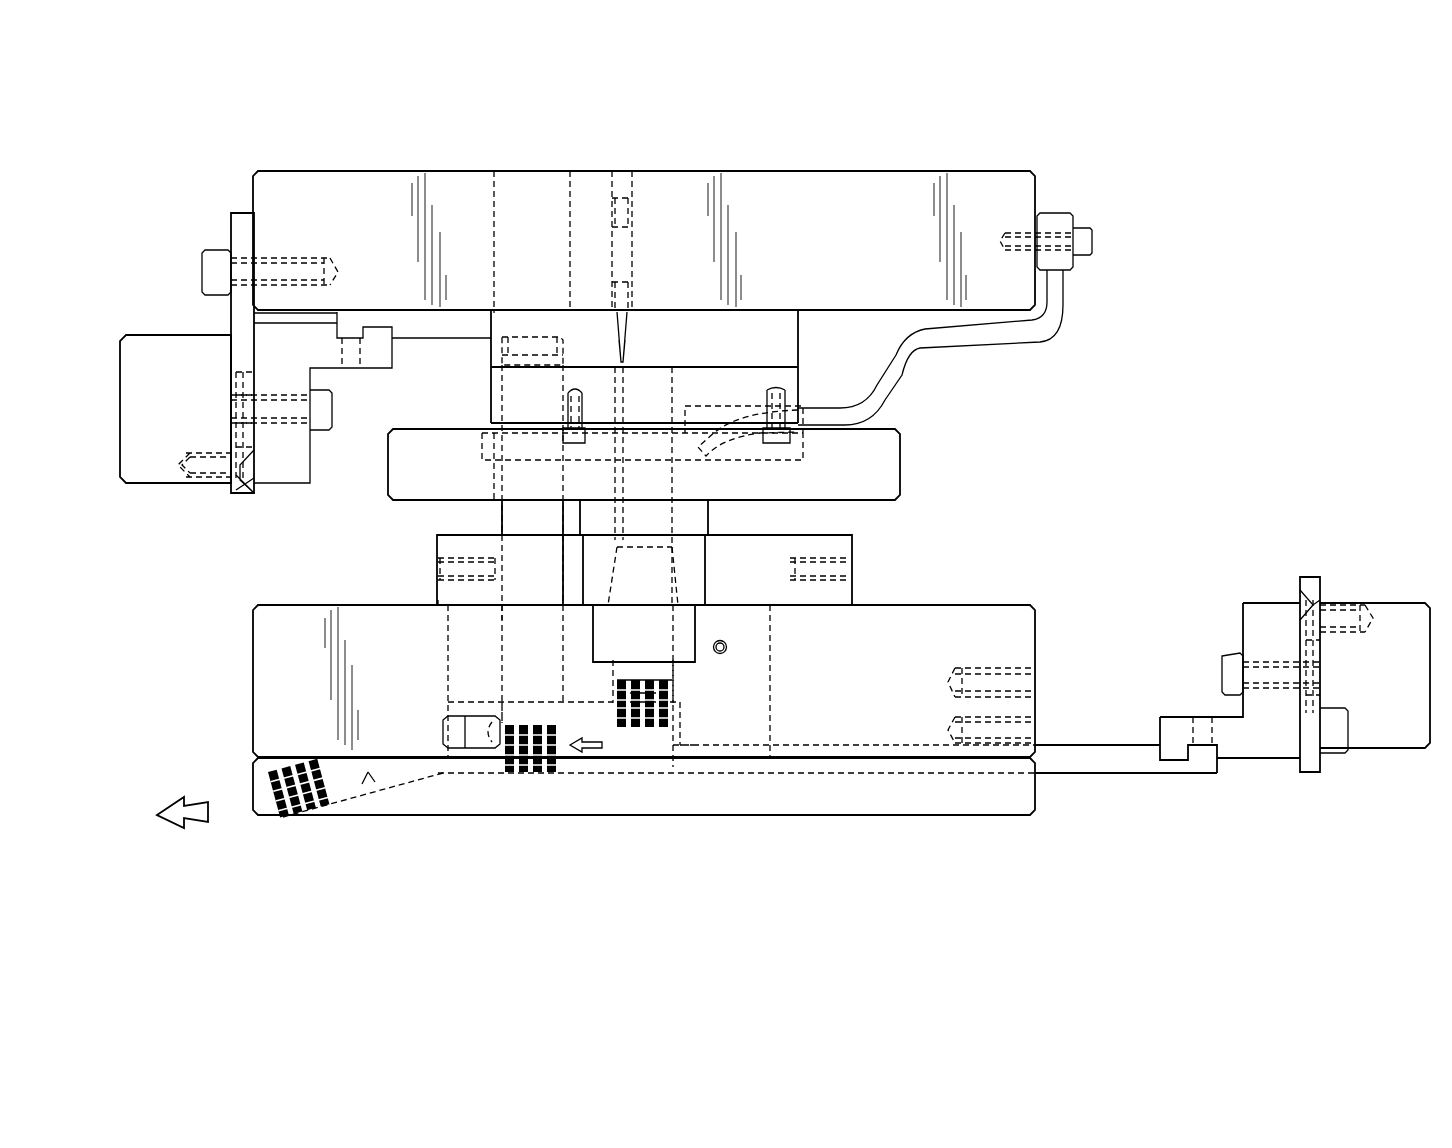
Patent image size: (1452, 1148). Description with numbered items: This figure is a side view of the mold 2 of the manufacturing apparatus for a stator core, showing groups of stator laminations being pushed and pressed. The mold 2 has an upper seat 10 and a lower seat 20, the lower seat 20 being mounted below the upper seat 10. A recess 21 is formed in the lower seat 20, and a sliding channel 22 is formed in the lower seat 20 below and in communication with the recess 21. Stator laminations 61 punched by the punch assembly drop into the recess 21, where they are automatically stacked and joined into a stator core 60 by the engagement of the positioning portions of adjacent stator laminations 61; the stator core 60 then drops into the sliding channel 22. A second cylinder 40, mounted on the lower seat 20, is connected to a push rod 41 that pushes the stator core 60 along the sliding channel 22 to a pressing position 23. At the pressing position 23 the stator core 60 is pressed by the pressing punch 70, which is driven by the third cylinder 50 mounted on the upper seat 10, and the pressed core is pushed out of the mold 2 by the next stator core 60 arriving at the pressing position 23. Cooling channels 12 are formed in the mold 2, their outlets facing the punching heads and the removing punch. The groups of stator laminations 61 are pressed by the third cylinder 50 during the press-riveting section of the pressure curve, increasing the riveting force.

The mold 2 is at (897, 142).
The upper seat 10 is at (972, 193).
The cooling channels 12 is at (1057, 302).
The lower seat 20 is at (977, 627).
The recess 21 is at (657, 638).
The sliding channel 22 is at (372, 775).
The pressing position 23 is at (530, 772).
The second cylinder 40 is at (1382, 718).
The push rod 41 is at (1085, 758).
The third cylinder 50 is at (180, 358).
The stator core 60 is at (643, 733).
The stator laminations 61 is at (658, 680).
The pressing punch 70 is at (517, 660).